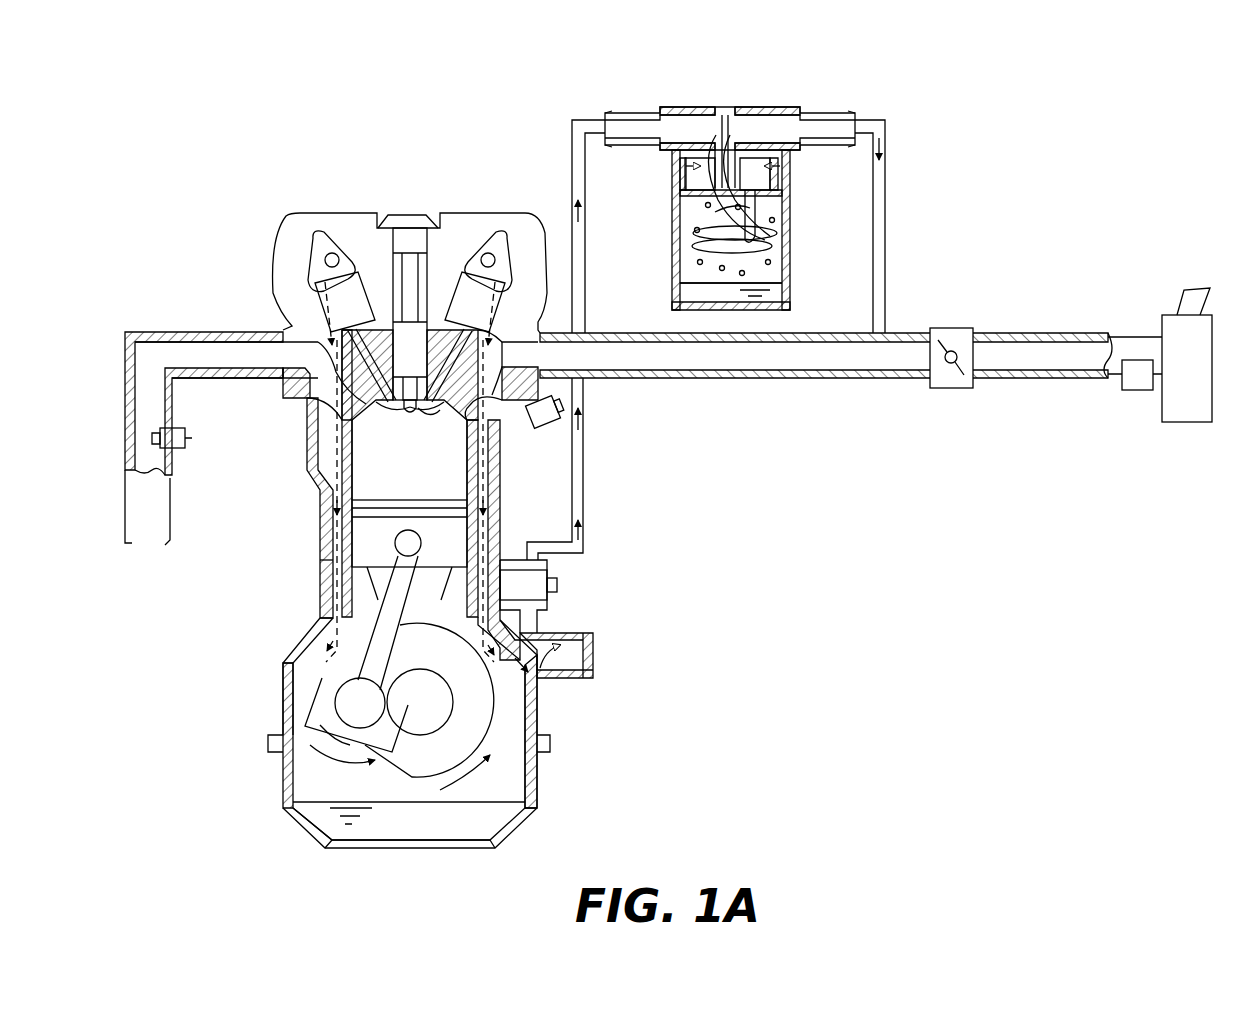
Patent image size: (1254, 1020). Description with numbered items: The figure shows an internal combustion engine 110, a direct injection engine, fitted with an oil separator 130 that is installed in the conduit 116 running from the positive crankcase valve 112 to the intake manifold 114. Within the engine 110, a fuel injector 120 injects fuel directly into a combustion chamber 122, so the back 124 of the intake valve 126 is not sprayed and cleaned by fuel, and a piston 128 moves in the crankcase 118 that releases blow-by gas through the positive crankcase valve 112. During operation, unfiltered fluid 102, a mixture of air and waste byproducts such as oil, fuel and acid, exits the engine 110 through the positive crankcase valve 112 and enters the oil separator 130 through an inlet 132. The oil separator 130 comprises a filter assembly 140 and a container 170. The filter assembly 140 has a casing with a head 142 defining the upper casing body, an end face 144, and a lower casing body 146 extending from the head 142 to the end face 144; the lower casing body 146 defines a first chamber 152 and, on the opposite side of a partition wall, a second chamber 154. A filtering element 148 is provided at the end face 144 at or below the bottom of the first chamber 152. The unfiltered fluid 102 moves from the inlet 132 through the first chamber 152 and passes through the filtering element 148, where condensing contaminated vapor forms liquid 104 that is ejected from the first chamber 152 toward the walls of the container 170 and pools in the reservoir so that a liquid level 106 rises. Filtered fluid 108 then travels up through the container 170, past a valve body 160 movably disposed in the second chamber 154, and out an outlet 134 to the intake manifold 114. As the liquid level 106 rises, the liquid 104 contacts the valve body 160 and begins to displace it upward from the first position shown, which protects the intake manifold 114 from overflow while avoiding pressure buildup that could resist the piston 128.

The unfiltered fluid 102 is at (605, 118).
The liquid 104 is at (690, 294).
The liquid level 106 is at (785, 285).
The filtered fluid 108 is at (885, 135).
The internal combustion engine 110 is at (228, 293).
The positive crankcase valve 112 is at (560, 585).
The intake manifold 114 is at (775, 360).
The conduit 116 is at (585, 483).
The crankcase 118 is at (282, 670).
The fuel injector 120 is at (547, 430).
The combustion chamber 122 is at (322, 508).
The back of intake valve 124 is at (505, 352).
The intake valve 126 is at (452, 410).
The piston 128 is at (322, 568).
The oil separator 130 is at (750, 78).
The inlet 132 is at (668, 107).
The outlet 134 is at (790, 107).
The filter assembly 140 is at (785, 160).
The head 142 is at (725, 102).
The end face 144 is at (778, 213).
The lower casing body 146 is at (675, 185).
The filtering element 148 is at (678, 212).
The first chamber 152 is at (682, 165).
The second chamber 154 is at (778, 180).
The valve body 160 is at (770, 246).
The container 170 is at (800, 292).